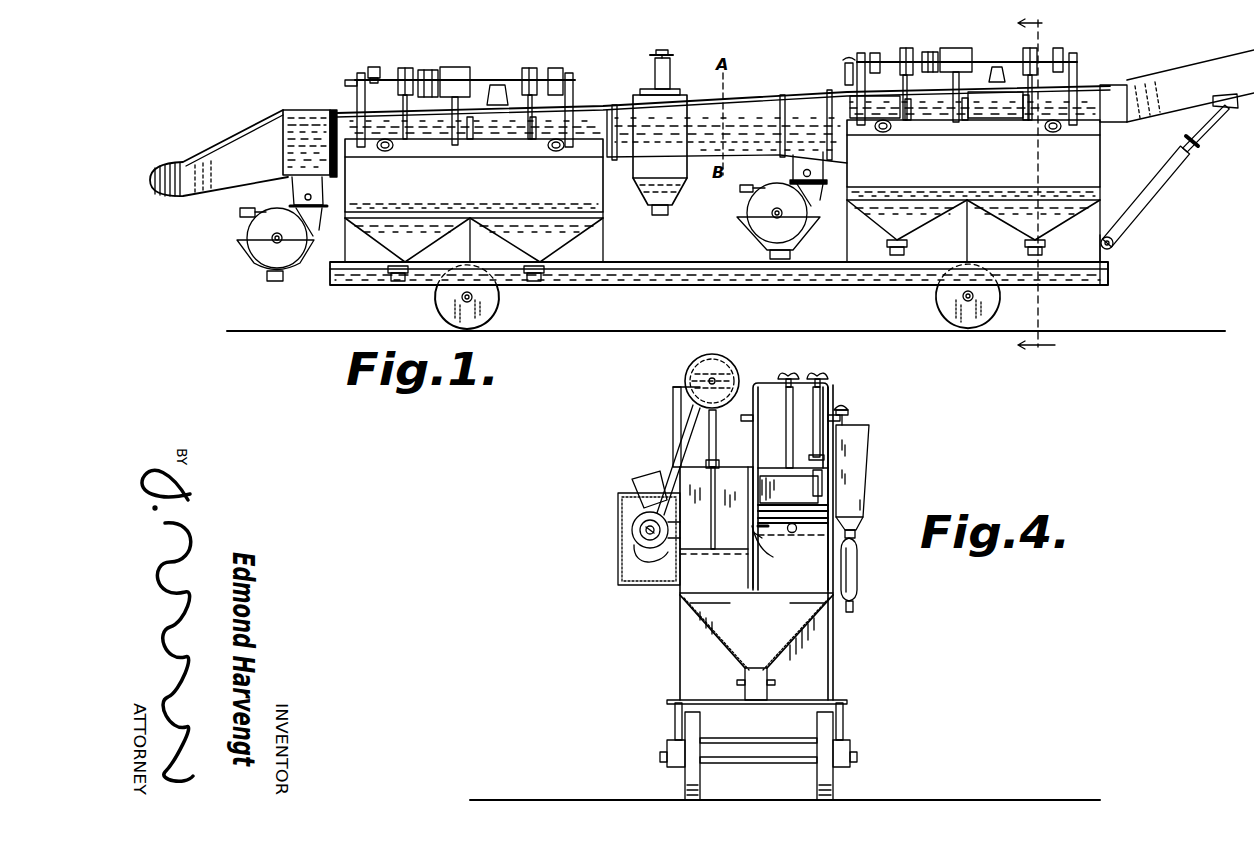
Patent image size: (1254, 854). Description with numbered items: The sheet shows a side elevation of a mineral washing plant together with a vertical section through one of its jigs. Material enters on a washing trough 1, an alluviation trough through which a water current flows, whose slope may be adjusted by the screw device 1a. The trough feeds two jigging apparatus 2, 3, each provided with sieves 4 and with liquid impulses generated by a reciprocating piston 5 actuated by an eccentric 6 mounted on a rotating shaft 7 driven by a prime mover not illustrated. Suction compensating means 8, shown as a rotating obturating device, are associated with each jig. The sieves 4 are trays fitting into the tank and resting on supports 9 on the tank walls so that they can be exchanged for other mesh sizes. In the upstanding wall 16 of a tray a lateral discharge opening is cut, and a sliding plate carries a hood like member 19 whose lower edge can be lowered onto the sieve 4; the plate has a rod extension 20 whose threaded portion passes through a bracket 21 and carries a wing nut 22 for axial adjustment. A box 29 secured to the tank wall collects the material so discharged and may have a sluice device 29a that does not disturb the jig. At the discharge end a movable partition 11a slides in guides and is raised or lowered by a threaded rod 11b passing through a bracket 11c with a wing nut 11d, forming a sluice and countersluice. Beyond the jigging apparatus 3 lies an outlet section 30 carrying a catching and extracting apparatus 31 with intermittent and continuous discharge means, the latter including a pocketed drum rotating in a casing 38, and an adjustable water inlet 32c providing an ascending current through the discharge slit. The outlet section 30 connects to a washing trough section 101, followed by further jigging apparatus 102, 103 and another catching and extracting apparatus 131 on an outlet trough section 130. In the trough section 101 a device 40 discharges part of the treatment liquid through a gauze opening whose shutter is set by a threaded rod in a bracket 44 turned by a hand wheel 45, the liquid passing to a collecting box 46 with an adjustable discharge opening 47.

In FIG. 1, the washing trough 1 is at (1198, 75).
In FIG. 1, the screw device 1a is at (1195, 160).
In FIG. 1, the jigging apparatus 2 is at (1065, 217).
In FIG. 4, the jigging apparatus 2 is at (679, 634).
In FIG. 1, the jigging apparatus 3 is at (922, 224).
In FIG. 1, the sieve 4 is at (1036, 195).
In FIG. 4, the sieve 4 is at (795, 532).
In FIG. 4, the reciprocating piston 5 is at (709, 555).
In FIG. 1, the eccentric 6 is at (406, 68).
In FIG. 4, the eccentric 6 is at (686, 381).
In FIG. 1, the rotating shaft 7 is at (486, 80).
In FIG. 4, the rotating shaft 7 is at (709, 377).
In FIG. 1, the suction compensating means 8 is at (589, 196).
In FIG. 4, the suction compensating means 8 is at (613, 567).
In FIG. 4, the support 9 is at (764, 542).
In FIG. 4, the movable partition 11a is at (776, 467).
In FIG. 1, the threaded rod 11b is at (355, 80).
In FIG. 4, the threaded rod 11b is at (786, 413).
In FIG. 1, the bracket 11c is at (845, 71).
In FIG. 4, the bracket 11c is at (755, 384).
In FIG. 1, the wing nut 11d is at (849, 63).
In FIG. 4, the wing nut 11d is at (790, 366).
In FIG. 4, the upstanding wall 16 is at (816, 472).
In FIG. 4, the hood like member 19 is at (812, 488).
In FIG. 1, the rod extension 20 is at (936, 105).
In FIG. 4, the rod extension 20 is at (817, 422).
In FIG. 4, the bracket 21 is at (848, 405).
In FIG. 4, the wing nut 22 is at (830, 376).
In FIG. 4, the box 29 is at (866, 481).
In FIG. 4, the sluice device 29a is at (858, 586).
In FIG. 1, the outlet section 30 is at (777, 95).
In FIG. 1, the catching and extracting apparatus 31 is at (784, 179).
In FIG. 1, the adjustable water inlet 32c is at (803, 171).
In FIG. 1, the casing 38 is at (796, 237).
In FIG. 1, the liquid discharging device 40 is at (636, 95).
In FIG. 1, the bracket 44 is at (671, 72).
In FIG. 1, the hand wheel 45 is at (664, 52).
In FIG. 1, the collecting box 46 is at (682, 186).
In FIG. 1, the adjustable discharge opening 47 is at (664, 215).
In FIG. 1, the washing trough section 101 is at (733, 100).
In FIG. 1, the jigging apparatus 102 is at (589, 235).
In FIG. 1, the jigging apparatus 103 is at (337, 277).
In FIG. 1, the outlet trough section 130 is at (328, 110).
In FIG. 1, the catching and extracting apparatus 131 is at (295, 200).